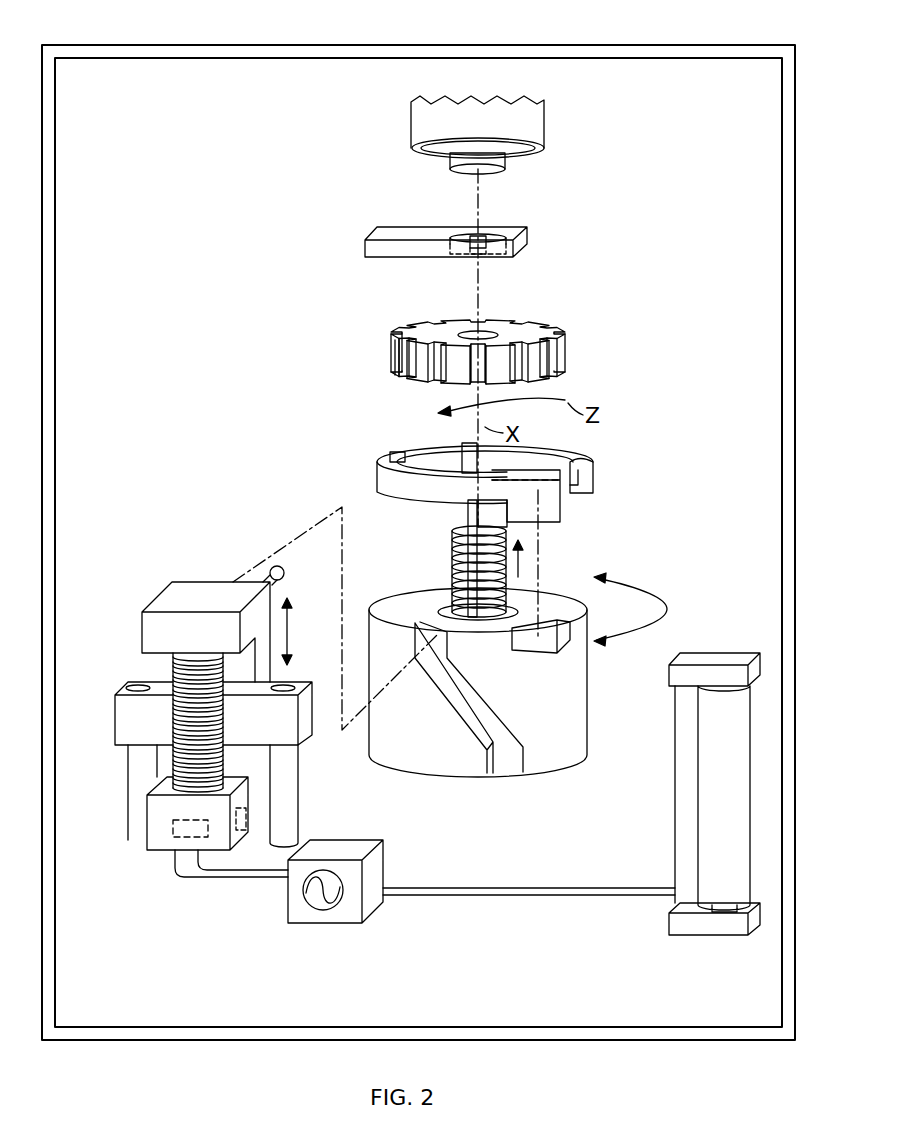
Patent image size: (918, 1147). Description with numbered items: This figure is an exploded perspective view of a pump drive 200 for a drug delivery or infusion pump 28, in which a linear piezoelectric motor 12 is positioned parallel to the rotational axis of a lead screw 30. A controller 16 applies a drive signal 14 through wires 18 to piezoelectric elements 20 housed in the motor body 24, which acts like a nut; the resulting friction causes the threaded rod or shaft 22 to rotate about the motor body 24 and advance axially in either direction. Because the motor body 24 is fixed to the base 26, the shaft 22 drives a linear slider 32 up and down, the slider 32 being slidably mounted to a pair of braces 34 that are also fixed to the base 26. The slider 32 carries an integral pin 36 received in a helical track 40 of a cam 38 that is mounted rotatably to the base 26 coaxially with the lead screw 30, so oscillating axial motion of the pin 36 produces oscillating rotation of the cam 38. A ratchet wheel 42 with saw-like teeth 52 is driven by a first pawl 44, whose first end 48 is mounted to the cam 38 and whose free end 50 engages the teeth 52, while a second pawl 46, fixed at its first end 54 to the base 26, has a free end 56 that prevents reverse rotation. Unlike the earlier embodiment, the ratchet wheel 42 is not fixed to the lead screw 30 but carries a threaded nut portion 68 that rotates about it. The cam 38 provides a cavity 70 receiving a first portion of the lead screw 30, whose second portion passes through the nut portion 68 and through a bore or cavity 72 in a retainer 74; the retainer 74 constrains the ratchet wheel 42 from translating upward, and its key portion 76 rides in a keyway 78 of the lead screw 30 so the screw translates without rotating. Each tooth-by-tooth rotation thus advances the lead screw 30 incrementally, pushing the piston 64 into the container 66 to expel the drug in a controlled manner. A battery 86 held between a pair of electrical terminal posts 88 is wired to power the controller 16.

The motor 12 is at (147, 838).
The drive signal 14 is at (320, 906).
The controller 16 is at (362, 897).
The wires 18 is at (233, 878).
The piezoelectric elements 20 is at (246, 822).
The threaded rod or shaft 22 is at (173, 678).
The motor body 24 is at (152, 785).
The base 26 is at (86, 992).
The drug delivery or infusion pump 28 is at (153, 45).
The lead screw 30 is at (452, 545).
The linear slider 32 is at (168, 600).
The braces 34 is at (128, 765).
The pin 36 is at (268, 565).
The cam 38 is at (500, 687).
The track 40 is at (507, 778).
The ratchet wheel 42 is at (508, 323).
The first pawl 44 is at (486, 479).
The second pawl 46 is at (593, 475).
The first end 48 is at (560, 522).
The free end 50 is at (396, 450).
The teeth 52 is at (395, 360).
The first end 54 is at (462, 458).
The free end 56 is at (572, 483).
The piston 64 is at (507, 168).
The container 66 is at (543, 125).
The threaded nut portion 68 is at (502, 334).
The cavity 70 is at (442, 605).
The through bore or cavity 72 is at (458, 235).
The retainer 74 is at (375, 233).
The key portion 76 is at (478, 233).
The keyway 78 is at (468, 578).
The battery 86 is at (712, 799).
The electrical terminal posts 88 is at (718, 660).
The pump drive 200 is at (168, 149).